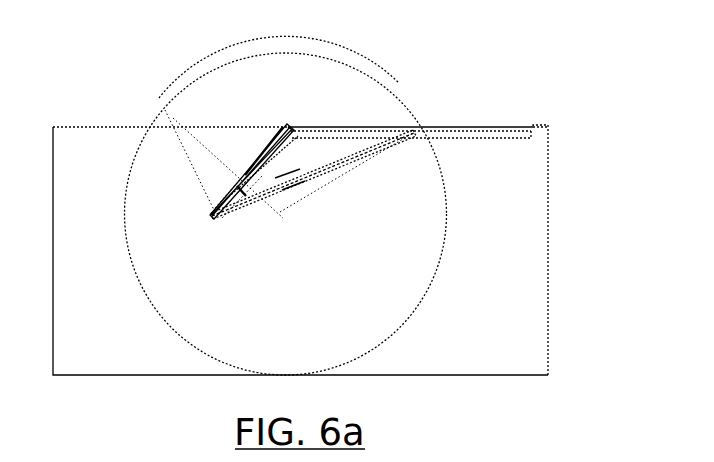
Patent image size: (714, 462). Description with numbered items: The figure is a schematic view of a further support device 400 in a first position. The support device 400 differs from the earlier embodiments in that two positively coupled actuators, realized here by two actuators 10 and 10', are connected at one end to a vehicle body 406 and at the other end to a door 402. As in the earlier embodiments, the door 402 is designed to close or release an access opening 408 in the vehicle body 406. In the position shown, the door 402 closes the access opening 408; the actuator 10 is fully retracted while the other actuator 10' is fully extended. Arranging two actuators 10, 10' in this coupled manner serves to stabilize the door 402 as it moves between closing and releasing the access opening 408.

The actuator 10 is at (216, 186).
The actuator 10' is at (313, 196).
The support device 400 is at (470, 104).
The door 402 is at (372, 128).
The vehicle body 406 is at (536, 258).
The access opening 408 is at (485, 140).